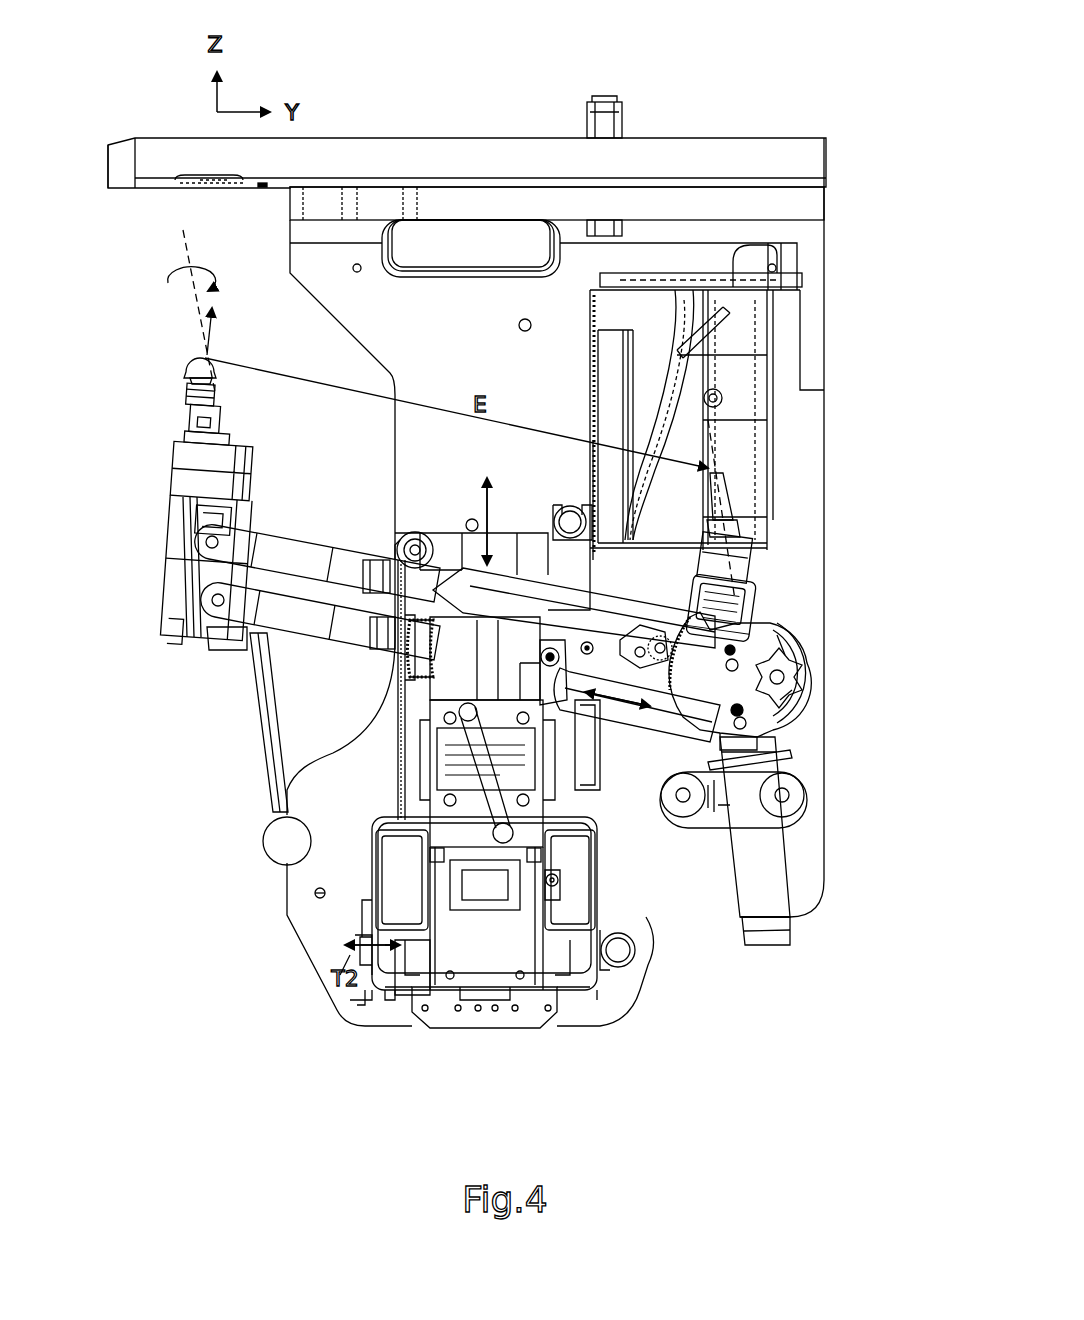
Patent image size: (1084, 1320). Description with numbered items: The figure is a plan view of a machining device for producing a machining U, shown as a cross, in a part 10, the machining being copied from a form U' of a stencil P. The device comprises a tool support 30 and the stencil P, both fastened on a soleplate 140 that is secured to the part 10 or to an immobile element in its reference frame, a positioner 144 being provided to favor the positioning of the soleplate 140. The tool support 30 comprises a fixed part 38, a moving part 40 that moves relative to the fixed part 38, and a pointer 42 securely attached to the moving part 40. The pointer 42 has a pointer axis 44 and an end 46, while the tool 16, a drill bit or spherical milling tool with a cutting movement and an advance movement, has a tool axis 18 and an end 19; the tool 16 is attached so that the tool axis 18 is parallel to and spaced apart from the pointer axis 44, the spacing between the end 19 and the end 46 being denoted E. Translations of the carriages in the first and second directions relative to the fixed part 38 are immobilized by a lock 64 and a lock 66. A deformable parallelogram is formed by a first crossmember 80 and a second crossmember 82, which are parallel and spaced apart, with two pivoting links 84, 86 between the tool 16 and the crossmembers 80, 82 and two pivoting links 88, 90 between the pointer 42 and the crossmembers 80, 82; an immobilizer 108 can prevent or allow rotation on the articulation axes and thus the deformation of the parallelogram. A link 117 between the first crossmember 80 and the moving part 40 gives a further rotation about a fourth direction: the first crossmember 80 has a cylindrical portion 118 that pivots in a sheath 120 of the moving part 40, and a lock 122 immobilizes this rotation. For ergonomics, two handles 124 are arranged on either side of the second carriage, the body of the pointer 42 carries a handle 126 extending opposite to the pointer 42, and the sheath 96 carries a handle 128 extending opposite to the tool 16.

The part 10 is at (358, 140).
The tool 16 is at (190, 380).
The tool axis 18 is at (193, 308).
The end 19 is at (200, 365).
The tool support 30 is at (245, 1003).
The fixed part 38 is at (437, 528).
The moving part 40 is at (445, 673).
The pointer 42 is at (735, 500).
The pointer axis 44 is at (718, 430).
The end 46 is at (722, 475).
The lock 64 is at (600, 975).
The lock 66 is at (580, 890).
The first crossmember 80 is at (645, 690).
The second crossmember 82 is at (512, 585).
The pivoting link 84 is at (205, 600).
The pivoting link 86 is at (200, 540).
The pivoting link 88 is at (760, 708).
The pivoting link 90 is at (748, 650).
The sheath 96 is at (195, 560).
The immobilizer 108 is at (805, 676).
The link 117 is at (400, 548).
The cylindrical portion 118 is at (628, 632).
The sheath 120 is at (529, 632).
The lock 122 is at (587, 720).
The handles 124 is at (286, 880).
The handle 126 is at (783, 848).
The handle 128 is at (262, 688).
The soleplate 140 is at (388, 1040).
The positioner 144 is at (808, 795).